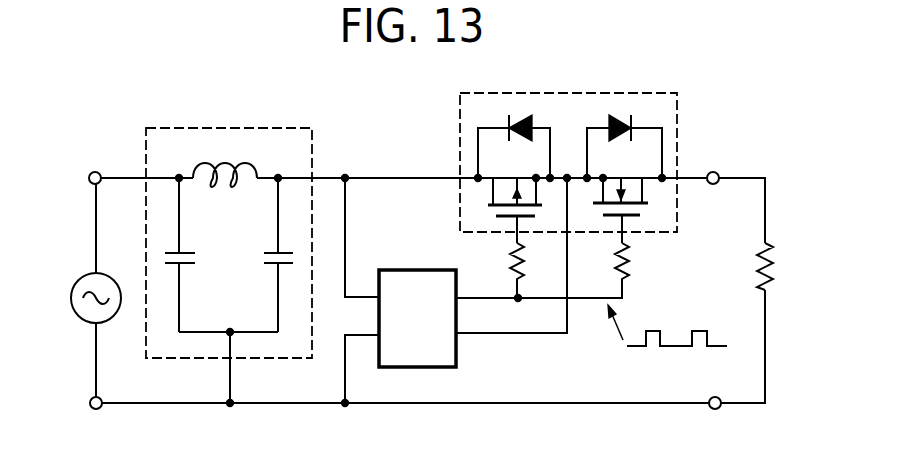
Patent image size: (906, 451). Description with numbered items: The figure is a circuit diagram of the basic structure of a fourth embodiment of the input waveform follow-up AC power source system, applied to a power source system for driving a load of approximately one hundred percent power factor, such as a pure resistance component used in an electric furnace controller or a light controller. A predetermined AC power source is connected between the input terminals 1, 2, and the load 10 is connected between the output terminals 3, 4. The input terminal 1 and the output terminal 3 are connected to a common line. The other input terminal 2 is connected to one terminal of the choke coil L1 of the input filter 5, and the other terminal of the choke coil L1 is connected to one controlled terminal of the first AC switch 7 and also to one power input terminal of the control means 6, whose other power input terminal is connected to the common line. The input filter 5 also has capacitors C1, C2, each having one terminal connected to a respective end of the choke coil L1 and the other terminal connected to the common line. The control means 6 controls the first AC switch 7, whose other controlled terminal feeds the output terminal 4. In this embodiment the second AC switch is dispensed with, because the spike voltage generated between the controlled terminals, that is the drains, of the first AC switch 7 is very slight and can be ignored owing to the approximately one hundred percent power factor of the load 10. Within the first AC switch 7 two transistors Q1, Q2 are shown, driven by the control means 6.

The input terminal 1 is at (86, 404).
The input terminal 2 is at (83, 179).
The output terminal 3 is at (717, 417).
The output terminal 4 is at (721, 168).
The input filter 5 is at (255, 128).
The control means 6 is at (411, 270).
The first AC switch 7 is at (575, 93).
The load 10 is at (774, 266).
The choke coil L1 is at (225, 163).
The capacitor C1 is at (188, 255).
The capacitor C2 is at (267, 255).
The MOSFET switching transistor Q1 is at (507, 186).
The MOSFET switching transistor Q2 is at (635, 178).